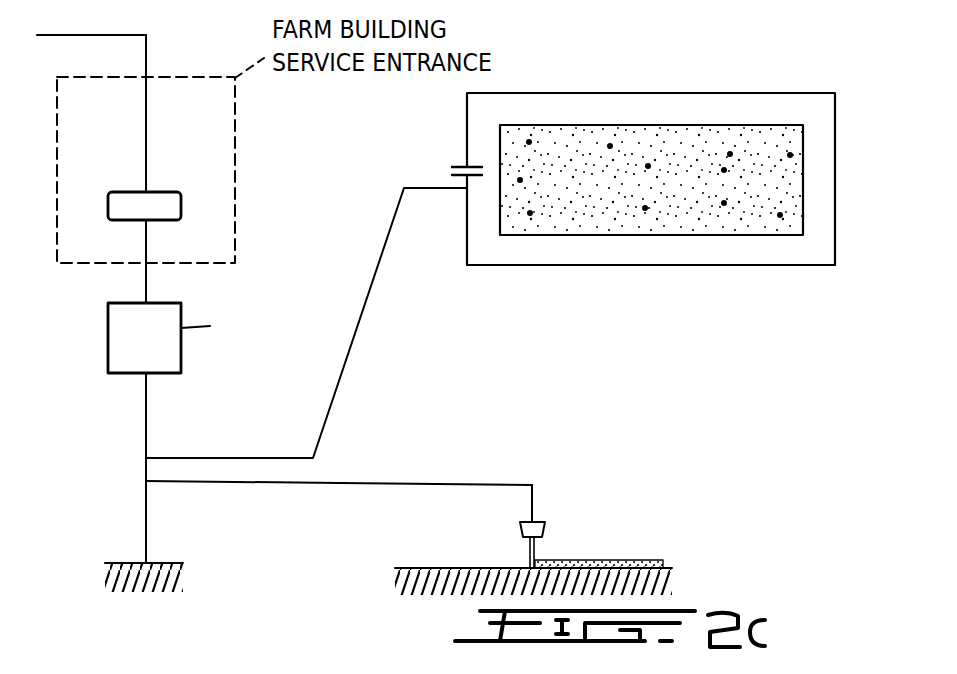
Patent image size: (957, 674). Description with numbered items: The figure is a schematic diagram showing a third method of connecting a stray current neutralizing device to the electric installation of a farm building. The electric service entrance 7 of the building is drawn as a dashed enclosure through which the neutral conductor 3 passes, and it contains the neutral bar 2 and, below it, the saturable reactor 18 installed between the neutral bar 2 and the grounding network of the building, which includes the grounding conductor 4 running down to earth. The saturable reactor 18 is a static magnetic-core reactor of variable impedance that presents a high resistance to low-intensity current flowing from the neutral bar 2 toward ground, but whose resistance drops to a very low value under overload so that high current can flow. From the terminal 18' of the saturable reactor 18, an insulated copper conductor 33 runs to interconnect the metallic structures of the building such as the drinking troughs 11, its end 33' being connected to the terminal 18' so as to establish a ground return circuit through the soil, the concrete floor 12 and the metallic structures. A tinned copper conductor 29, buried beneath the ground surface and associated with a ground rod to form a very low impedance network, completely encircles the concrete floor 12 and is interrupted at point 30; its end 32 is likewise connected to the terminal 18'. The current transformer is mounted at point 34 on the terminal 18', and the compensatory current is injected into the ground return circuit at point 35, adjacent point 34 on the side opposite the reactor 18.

The neutral bar 2 is at (118, 200).
The neutral conductor 3 is at (146, 48).
The grounding conductor 4 is at (146, 535).
The electric service entrance 7 is at (178, 78).
The drinking troughs 11 is at (521, 530).
The concrete floor 12 is at (748, 222).
The saturable reactor 18 is at (197, 335).
The terminal of the saturable reactor 18' is at (196, 415).
The tinned copper conductor 29 is at (756, 92).
The interruption point 30 is at (438, 170).
The end of the conductor 32 is at (460, 200).
The insulated copper conductor 33 is at (436, 482).
The end of the conductor 33' is at (243, 501).
The current transformer mounting point 34 is at (136, 404).
The injection point 35 is at (136, 436).